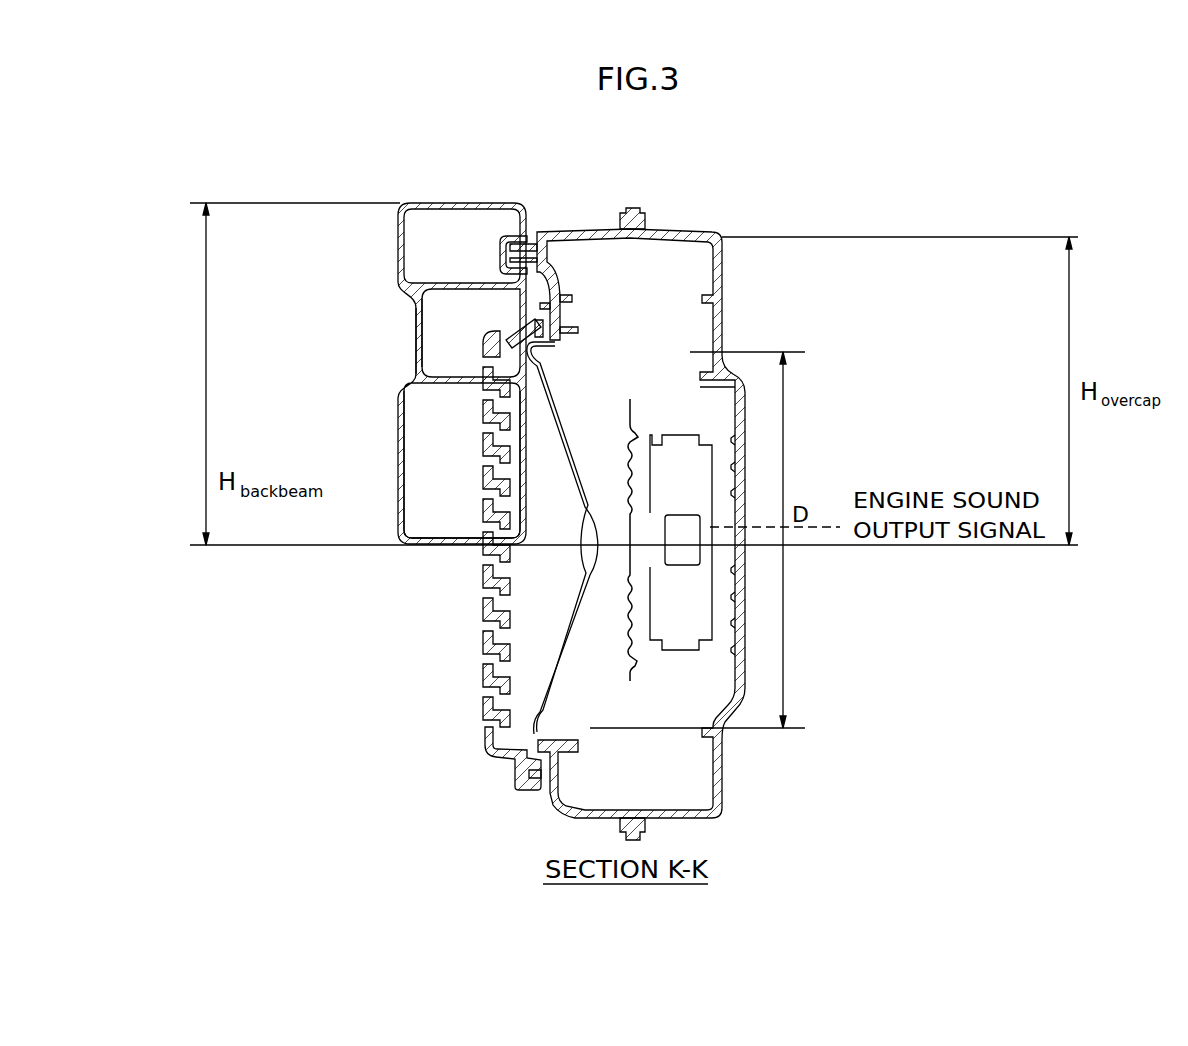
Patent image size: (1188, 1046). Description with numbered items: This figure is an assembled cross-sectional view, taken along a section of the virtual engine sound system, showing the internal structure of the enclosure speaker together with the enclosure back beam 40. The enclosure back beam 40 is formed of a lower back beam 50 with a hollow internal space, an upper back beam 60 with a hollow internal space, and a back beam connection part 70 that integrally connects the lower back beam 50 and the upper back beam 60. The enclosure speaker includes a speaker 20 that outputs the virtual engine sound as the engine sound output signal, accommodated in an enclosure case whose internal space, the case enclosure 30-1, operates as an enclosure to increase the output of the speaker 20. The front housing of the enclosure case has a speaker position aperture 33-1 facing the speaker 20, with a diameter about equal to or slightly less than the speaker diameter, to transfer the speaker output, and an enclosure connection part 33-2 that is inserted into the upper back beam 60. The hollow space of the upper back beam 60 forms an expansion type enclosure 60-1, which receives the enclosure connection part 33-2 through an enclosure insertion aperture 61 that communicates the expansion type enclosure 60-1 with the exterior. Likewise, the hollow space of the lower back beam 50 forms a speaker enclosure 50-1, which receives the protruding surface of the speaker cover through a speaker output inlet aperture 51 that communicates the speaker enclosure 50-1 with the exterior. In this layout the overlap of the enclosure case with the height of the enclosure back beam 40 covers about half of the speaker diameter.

The speaker 20 is at (650, 578).
The case enclosure 30-1 is at (658, 717).
The speaker position aperture 33-1 is at (553, 349).
The enclosure connection part 33-2 is at (562, 272).
The enclosure back beam 40 is at (285, 290).
The lower back beam 50 is at (398, 440).
The speaker enclosure 50-1 is at (474, 456).
The speaker output inlet aperture 51 is at (487, 546).
The upper back beam 60 is at (398, 265).
The expansion type enclosure 60-1 is at (481, 256).
The enclosure insertion aperture 61 is at (533, 244).
The back beam connection part 70 is at (418, 348).